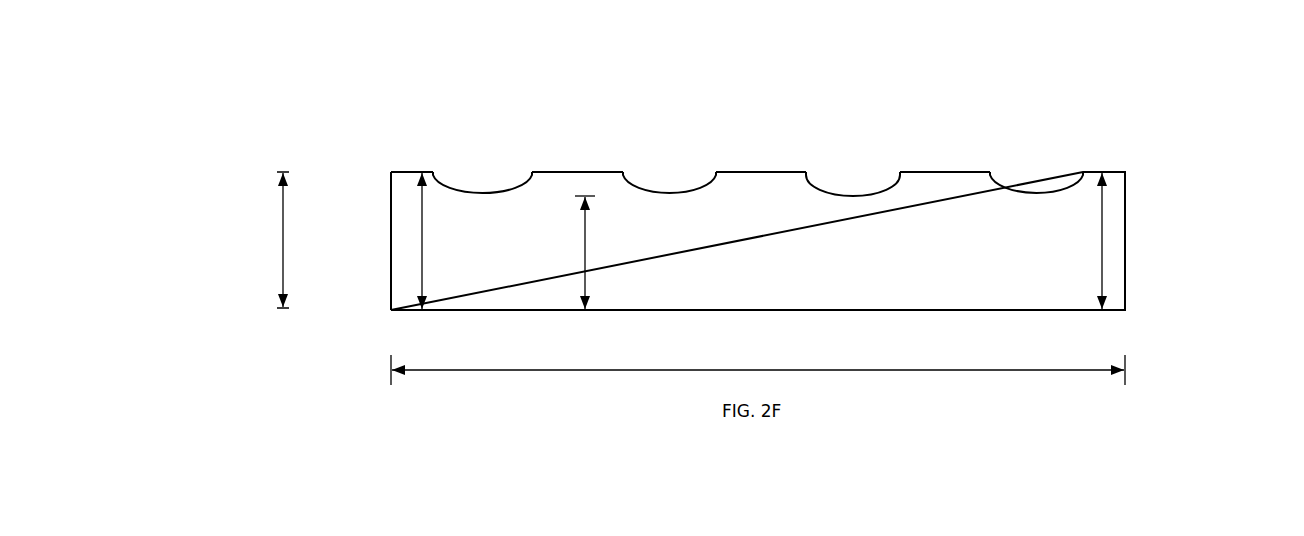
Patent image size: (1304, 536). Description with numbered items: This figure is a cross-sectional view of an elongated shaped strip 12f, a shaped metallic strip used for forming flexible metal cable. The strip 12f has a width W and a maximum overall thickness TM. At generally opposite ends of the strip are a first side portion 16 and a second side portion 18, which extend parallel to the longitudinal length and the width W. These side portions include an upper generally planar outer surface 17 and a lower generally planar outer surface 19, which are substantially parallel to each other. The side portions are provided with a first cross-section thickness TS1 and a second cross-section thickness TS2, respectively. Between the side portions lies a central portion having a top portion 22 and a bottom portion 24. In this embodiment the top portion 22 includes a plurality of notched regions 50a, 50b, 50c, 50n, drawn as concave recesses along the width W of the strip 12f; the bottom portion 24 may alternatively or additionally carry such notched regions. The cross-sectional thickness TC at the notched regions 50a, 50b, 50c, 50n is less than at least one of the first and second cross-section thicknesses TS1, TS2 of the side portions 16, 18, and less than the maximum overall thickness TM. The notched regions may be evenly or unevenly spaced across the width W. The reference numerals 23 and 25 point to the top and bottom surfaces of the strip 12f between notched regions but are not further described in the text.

The elongated shaped strip 12f is at (268, 49).
The first side portion 16 is at (1141, 121).
The upper generally planar outer surface 17 is at (1126, 262).
The second side portion 18 is at (397, 134).
The lower generally planar outer surface 19 is at (390, 264).
The top portion 22 is at (748, 173).
The top surface portion 23 is at (938, 170).
The bottom portion 24 is at (848, 310).
The bottom edge 25 is at (952, 313).
The notched region 50a is at (486, 163).
The notched region 50b is at (663, 161).
The notched region 50c is at (853, 161).
The notched region 50n is at (1031, 160).
The maximum overall thickness TM is at (283, 225).
The second cross-section thickness TS2 is at (422, 230).
The cross-sectional thickness of central portion TC is at (585, 257).
The first cross-section thickness TS1 is at (1102, 259).
The width W is at (882, 370).